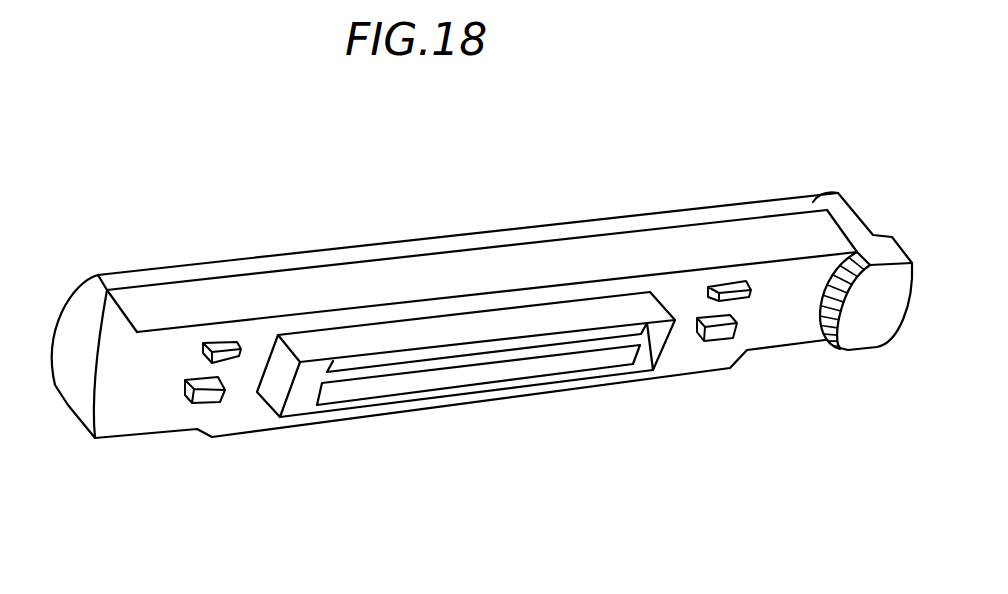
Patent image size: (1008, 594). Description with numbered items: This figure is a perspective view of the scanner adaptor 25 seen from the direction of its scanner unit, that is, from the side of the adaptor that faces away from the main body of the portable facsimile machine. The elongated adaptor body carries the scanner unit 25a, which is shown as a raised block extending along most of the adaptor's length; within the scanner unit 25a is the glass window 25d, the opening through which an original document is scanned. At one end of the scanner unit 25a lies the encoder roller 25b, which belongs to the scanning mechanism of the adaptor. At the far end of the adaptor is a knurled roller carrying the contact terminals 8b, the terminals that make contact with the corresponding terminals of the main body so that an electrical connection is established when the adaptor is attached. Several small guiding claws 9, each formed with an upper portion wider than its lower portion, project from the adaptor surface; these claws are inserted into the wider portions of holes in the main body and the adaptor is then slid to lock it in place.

The scanner adaptor 25 is at (780, 237).
The scanner unit 25a is at (312, 342).
The encoder roller 25b is at (639, 332).
The glass window 25d is at (470, 375).
The contact terminals 8b is at (824, 344).
The guiding claws 9 is at (203, 403).